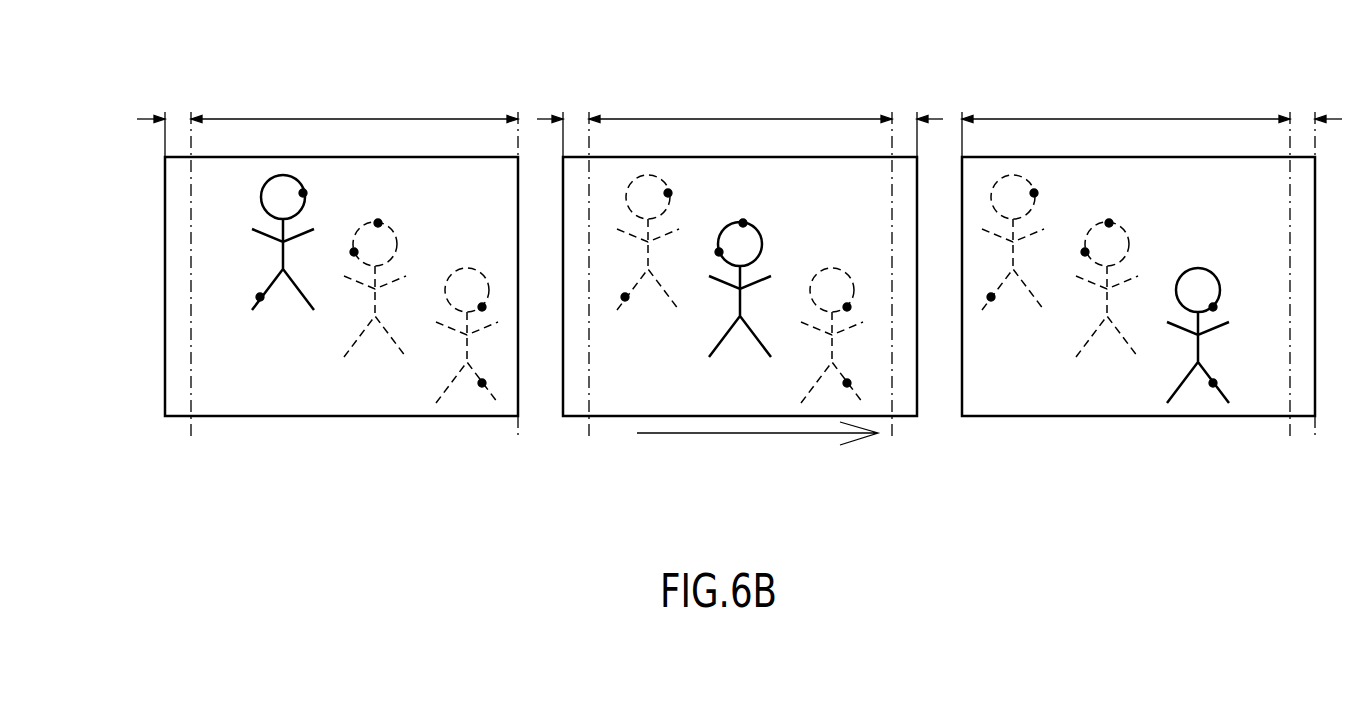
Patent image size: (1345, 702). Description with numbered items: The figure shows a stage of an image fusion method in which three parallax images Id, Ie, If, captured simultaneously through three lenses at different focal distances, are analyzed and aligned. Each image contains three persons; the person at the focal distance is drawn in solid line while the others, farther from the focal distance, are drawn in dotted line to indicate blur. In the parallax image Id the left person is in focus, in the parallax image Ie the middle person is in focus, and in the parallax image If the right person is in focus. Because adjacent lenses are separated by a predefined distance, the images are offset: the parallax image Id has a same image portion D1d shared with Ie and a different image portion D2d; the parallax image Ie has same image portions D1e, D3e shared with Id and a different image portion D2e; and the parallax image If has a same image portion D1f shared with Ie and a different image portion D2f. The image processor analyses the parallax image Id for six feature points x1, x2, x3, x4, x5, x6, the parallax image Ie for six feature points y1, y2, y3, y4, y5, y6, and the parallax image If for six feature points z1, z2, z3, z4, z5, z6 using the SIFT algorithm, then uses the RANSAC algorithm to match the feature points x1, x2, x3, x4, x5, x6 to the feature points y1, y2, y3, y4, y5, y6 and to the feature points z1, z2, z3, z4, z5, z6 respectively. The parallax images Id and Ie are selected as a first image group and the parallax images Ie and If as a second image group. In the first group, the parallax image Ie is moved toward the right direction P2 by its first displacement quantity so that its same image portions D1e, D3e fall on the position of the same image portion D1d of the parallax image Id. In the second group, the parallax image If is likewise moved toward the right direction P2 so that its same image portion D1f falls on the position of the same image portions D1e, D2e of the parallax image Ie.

The parallax image Id is at (165, 332).
The parallax image Ie is at (563, 245).
The parallax image If is at (962, 245).
The same image portion D1d is at (353, 119).
The different image portion D2d is at (177, 118).
The same image portion D1e is at (753, 119).
The different image portion D2e is at (577, 118).
The same image portion D3e is at (903, 118).
The same image portion D1f is at (1125, 119).
The different image portion D2f is at (1301, 118).
The right direction P2 is at (757, 446).
The feature point x1 is at (303, 193).
The feature point x2 is at (260, 297).
The feature point x3 is at (378, 223).
The feature point x4 is at (354, 252).
The feature point x5 is at (482, 307).
The feature point x6 is at (482, 383).
The feature point y1 is at (668, 193).
The feature point y2 is at (625, 297).
The feature point y3 is at (743, 223).
The feature point y4 is at (719, 252).
The feature point y5 is at (847, 307).
The feature point y6 is at (847, 383).
The feature point z1 is at (1034, 193).
The feature point z2 is at (991, 297).
The feature point z3 is at (1109, 223).
The feature point z4 is at (1085, 252).
The feature point z5 is at (1213, 307).
The feature point z6 is at (1213, 383).